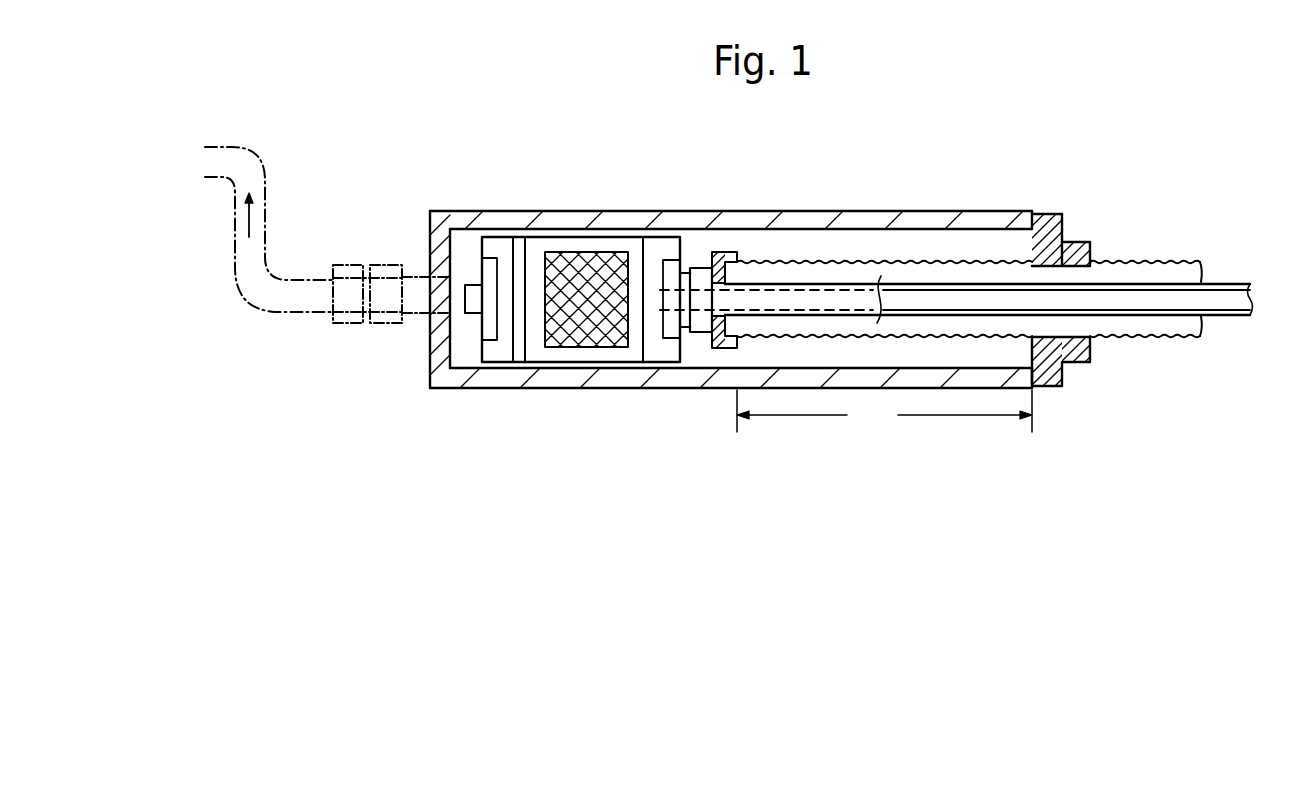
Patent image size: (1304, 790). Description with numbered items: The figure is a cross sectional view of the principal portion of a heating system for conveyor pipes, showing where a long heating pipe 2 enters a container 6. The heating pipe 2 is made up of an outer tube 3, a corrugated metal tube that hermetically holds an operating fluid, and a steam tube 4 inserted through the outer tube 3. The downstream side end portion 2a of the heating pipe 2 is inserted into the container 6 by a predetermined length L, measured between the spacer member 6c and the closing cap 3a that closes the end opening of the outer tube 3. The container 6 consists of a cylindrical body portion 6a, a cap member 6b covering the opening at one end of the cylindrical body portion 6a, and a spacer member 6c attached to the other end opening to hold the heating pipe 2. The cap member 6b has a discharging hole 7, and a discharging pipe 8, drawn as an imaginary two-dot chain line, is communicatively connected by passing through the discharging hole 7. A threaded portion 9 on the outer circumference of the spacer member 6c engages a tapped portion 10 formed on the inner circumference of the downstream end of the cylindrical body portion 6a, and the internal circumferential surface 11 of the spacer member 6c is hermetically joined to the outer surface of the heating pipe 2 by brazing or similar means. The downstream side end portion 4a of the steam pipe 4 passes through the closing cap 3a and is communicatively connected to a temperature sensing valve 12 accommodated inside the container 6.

The heating pipe 2 is at (986, 261).
The downstream side end portion of the heating pipe 2a is at (837, 260).
The outer tube 3 is at (933, 262).
The closing cap 3a is at (718, 348).
The steam tube 4 is at (957, 336).
The downstream side end portion of the steam pipe 4a is at (670, 298).
The container 6 is at (797, 389).
The cylindrical body portion 6a is at (777, 212).
The cap member 6b is at (430, 360).
The spacer member 6c is at (1072, 364).
The discharging hole 7 is at (449, 288).
The discharging pipe 8 is at (323, 312).
The threaded portion 9 is at (1042, 215).
The tapped portion 10 is at (1050, 250).
The internal circumferential surface 11 is at (1073, 335).
The temperature sensing valve 12 is at (591, 233).